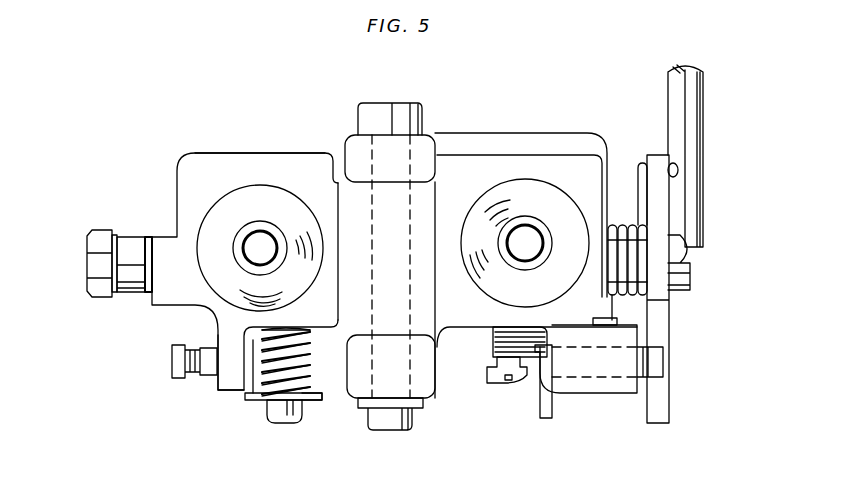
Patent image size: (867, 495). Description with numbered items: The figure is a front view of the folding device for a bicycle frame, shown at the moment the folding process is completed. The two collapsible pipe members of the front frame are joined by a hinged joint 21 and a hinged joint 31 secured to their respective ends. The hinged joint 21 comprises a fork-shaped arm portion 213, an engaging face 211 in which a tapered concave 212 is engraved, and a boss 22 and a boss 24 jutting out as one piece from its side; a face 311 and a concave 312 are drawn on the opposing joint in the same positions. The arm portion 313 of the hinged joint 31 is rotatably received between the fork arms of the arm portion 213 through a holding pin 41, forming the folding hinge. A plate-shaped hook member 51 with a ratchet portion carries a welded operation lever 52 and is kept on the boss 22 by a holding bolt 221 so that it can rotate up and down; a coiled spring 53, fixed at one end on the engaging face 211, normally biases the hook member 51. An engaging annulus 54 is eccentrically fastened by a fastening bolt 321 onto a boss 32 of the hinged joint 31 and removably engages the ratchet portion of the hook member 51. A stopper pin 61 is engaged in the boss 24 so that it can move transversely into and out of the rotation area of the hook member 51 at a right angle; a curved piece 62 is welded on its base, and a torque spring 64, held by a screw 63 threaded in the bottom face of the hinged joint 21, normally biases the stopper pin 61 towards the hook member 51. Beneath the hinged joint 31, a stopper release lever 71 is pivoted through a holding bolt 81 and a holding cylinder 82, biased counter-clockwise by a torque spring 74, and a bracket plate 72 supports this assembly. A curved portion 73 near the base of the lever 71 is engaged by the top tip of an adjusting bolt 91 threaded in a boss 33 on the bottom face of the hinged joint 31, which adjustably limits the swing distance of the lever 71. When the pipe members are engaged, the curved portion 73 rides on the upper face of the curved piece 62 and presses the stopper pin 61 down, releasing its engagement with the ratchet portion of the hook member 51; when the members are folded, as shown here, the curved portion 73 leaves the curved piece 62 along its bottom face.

The hinged joint 21 is at (467, 125).
The engaging face 211 is at (490, 168).
The tapered concave 212 is at (548, 200).
The arm portion 213 is at (356, 148).
The boss 22 is at (616, 225).
The holding bolt 221 is at (690, 272).
The boss 24 is at (595, 385).
The hinged joint 31 is at (290, 146).
The block face 311 is at (228, 165).
The roller bore 312 is at (236, 200).
The arm portion 313 is at (434, 287).
The boss 32 is at (170, 243).
The fastening bolt 321 is at (90, 272).
The boss 33 is at (225, 357).
The holding pin 41 is at (392, 110).
The hook member 51 is at (669, 390).
The operation lever 52 is at (695, 117).
The coiled spring 53 is at (643, 243).
The engaging annulus 54 is at (133, 295).
The stopper pin 61 is at (643, 378).
The curved piece 62 is at (543, 405).
The screw 63 is at (497, 383).
The torque spring 64 is at (497, 350).
The stopper release lever 71 is at (324, 405).
The bracket plate 72 is at (247, 370).
The curved portion 73 is at (262, 400).
The torque spring 74 is at (308, 340).
The holding bolt 81 is at (292, 424).
The holding cylinder 82 is at (313, 369).
The adjusting bolt 91 is at (173, 365).